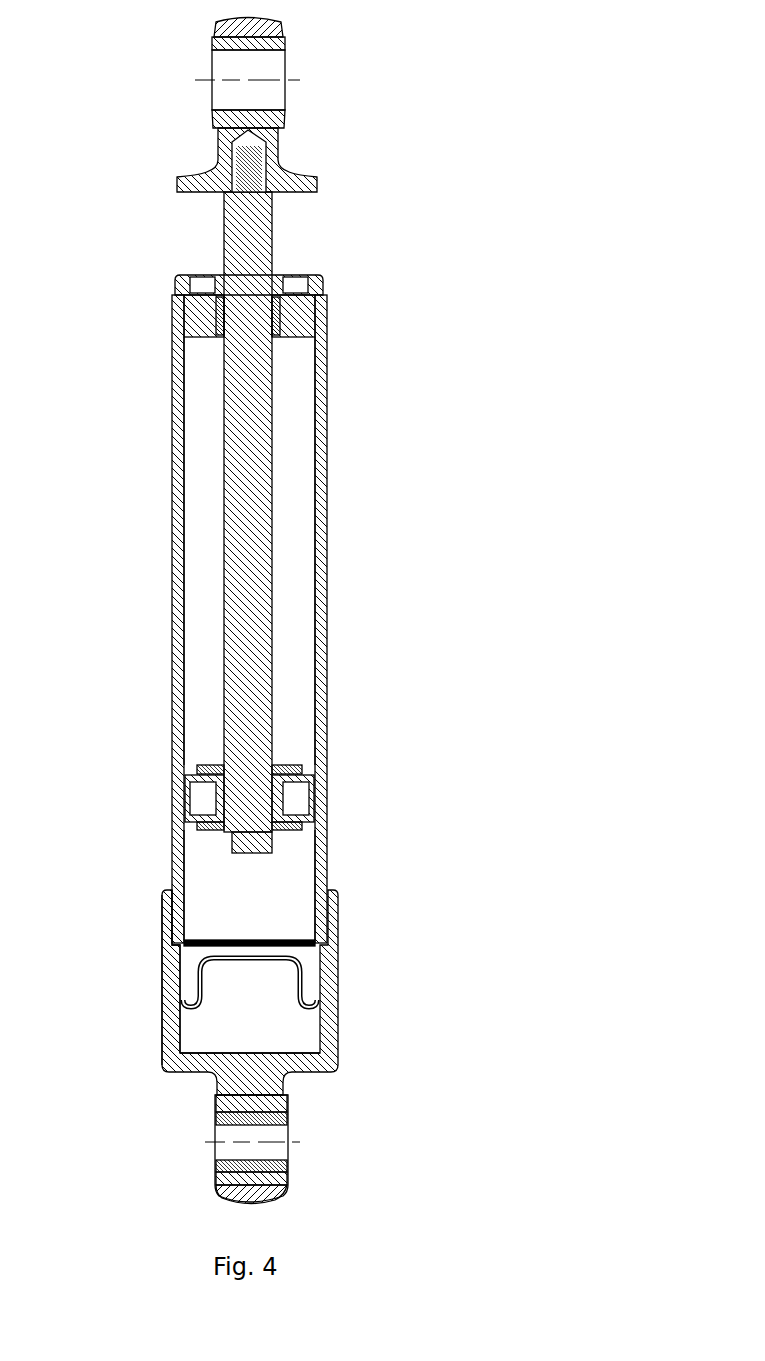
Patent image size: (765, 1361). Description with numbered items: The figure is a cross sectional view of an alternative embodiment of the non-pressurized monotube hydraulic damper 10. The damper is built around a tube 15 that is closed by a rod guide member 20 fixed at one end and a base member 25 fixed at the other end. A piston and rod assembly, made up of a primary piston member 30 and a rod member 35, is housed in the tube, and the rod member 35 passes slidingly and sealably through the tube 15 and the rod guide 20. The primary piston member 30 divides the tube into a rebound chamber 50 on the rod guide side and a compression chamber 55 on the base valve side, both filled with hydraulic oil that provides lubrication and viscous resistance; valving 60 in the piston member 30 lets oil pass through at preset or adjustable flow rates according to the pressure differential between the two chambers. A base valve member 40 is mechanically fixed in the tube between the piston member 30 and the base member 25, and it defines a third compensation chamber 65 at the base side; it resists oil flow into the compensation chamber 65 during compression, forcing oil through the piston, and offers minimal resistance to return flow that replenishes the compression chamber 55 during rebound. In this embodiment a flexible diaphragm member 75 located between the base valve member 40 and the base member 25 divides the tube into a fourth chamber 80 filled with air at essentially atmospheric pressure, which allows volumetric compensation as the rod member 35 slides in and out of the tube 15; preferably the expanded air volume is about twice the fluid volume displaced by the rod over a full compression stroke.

The monotube hydraulic damper 10 is at (115, 108).
The tube 15 is at (172, 455).
The rod guide member 20 is at (177, 277).
The base member 25 is at (165, 987).
The primary piston member 30 is at (185, 793).
The rod member 35 is at (225, 235).
The base valve member 40 is at (282, 940).
The rebound chamber 50 is at (295, 545).
The compression chamber 55 is at (295, 867).
The valving 60 is at (183, 767).
The compensation chamber 65 is at (334, 986).
The flexible diaphragm member 75 is at (300, 965).
The fourth chamber 80 is at (302, 1042).